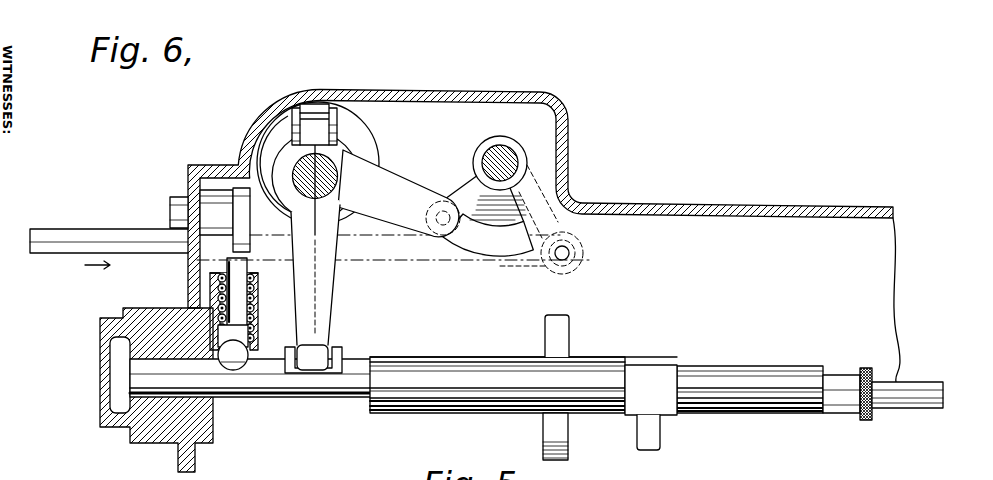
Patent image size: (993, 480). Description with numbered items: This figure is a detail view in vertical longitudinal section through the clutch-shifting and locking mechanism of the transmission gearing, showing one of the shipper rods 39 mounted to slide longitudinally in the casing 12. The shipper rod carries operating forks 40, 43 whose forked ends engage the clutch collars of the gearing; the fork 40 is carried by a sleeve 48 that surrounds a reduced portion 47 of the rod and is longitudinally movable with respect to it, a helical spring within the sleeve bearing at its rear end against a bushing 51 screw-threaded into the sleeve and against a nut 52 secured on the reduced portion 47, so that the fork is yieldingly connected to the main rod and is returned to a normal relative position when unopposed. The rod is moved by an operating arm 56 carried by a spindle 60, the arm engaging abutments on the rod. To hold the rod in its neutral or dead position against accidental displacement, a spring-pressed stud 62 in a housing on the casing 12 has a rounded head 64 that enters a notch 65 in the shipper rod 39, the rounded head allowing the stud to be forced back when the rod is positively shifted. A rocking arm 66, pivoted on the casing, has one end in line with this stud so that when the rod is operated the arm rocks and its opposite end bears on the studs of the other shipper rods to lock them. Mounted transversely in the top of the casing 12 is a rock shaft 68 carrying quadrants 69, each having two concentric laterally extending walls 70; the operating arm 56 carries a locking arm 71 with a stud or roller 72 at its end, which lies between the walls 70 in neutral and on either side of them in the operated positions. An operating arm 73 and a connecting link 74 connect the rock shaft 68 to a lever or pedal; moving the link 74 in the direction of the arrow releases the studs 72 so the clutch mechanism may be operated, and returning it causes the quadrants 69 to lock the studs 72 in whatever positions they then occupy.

The casing 12 is at (731, 207).
The shipper rod 39 is at (455, 372).
The operating fork 40 is at (562, 343).
The operating fork 43 is at (660, 437).
The reduced portion 47 is at (944, 393).
The sleeve 48 is at (762, 415).
The bushing 51 is at (833, 418).
The nut 52 is at (866, 420).
The operating arm 56 is at (332, 290).
The spindle 60 is at (297, 163).
The spring-pressed stud 62 is at (259, 290).
The rounded head 64 is at (240, 356).
The notch 65 is at (238, 372).
The rocking arm 66 is at (250, 250).
The rock shaft 68 is at (507, 155).
The quadrant 69 is at (463, 187).
The wall 70 is at (523, 216).
The locking arm 71 is at (398, 193).
The stud or roller 72 is at (442, 228).
The operating arm 73 is at (560, 228).
The connecting link 74 is at (83, 240).